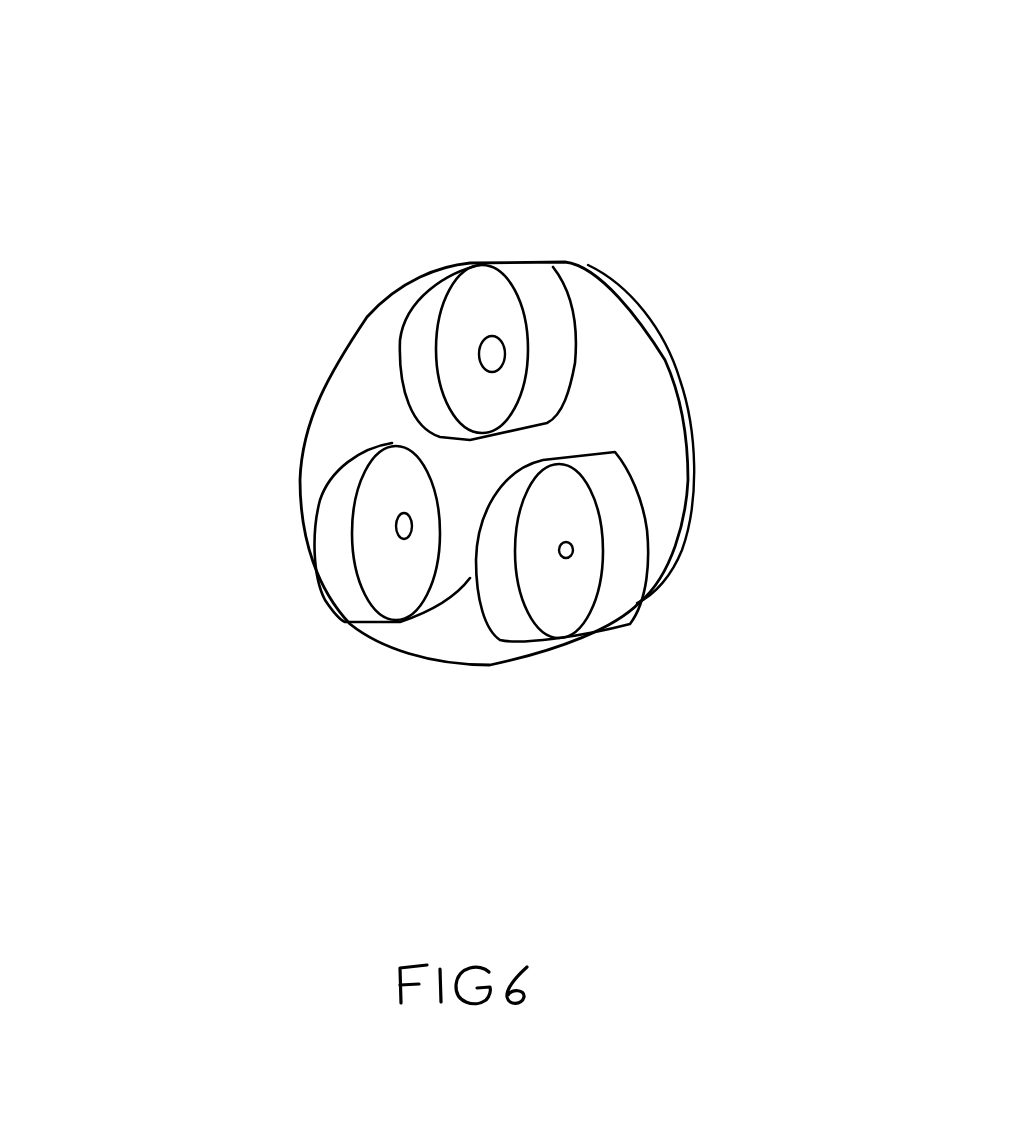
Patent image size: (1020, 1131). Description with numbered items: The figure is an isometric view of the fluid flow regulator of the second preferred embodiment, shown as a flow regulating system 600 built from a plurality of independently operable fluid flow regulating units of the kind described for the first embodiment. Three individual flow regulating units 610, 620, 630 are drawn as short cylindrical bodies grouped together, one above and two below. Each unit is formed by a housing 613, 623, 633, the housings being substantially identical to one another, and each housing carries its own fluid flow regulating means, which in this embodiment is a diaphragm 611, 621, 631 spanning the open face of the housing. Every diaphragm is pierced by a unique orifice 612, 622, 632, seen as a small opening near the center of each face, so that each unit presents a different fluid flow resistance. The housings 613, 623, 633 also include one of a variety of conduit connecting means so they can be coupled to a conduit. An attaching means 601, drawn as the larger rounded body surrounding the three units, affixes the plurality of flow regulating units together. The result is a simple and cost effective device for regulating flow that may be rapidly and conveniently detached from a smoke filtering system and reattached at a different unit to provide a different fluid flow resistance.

The flow regulating system 600 is at (763, 203).
The attaching means 601 is at (632, 387).
The flow regulating unit 610 is at (524, 291).
The diaphragm 611 is at (483, 302).
The orifice 612 is at (478, 360).
The housing 613 is at (428, 309).
The flow regulating unit 620 is at (612, 499).
The diaphragm 621 is at (557, 605).
The orifice 622 is at (573, 558).
The housing 623 is at (517, 622).
The flow regulating unit 630 is at (433, 590).
The diaphragm 631 is at (380, 577).
The orifice 632 is at (394, 531).
The housing 633 is at (340, 505).